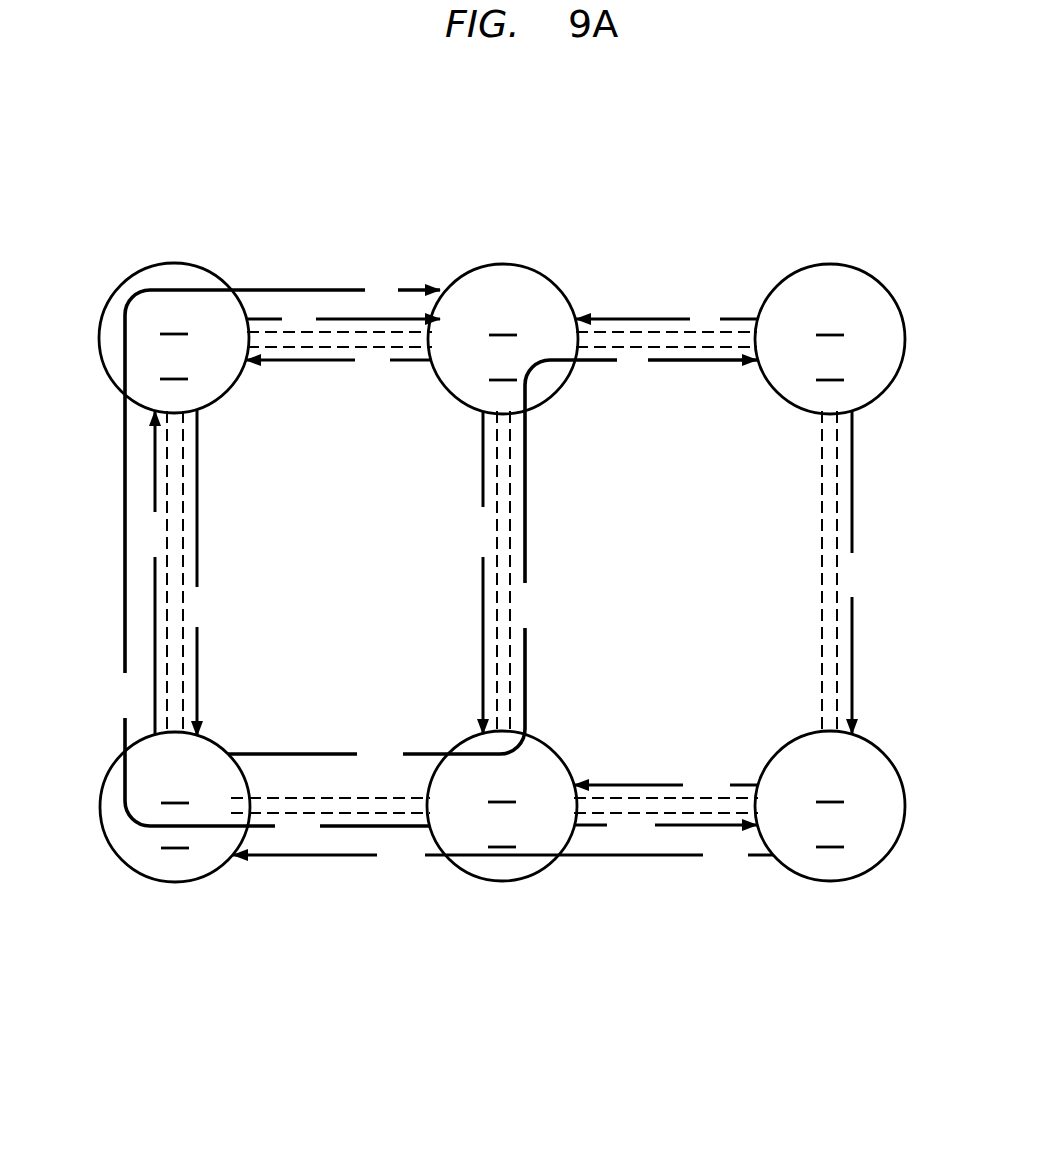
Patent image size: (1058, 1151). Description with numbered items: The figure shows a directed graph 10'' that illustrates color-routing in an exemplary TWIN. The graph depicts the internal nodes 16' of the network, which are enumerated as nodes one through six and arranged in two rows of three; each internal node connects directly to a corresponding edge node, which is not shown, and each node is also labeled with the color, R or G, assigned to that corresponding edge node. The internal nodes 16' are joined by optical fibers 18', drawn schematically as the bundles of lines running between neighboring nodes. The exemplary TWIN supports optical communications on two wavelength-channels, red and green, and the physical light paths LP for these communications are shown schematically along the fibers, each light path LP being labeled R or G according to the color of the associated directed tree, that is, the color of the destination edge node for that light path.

The internal nodes 16' is at (514, 576).
The optical fibers 18' is at (502, 543).
The physical light paths LP is at (342, 318).
The directed graph 10'' is at (494, 675).